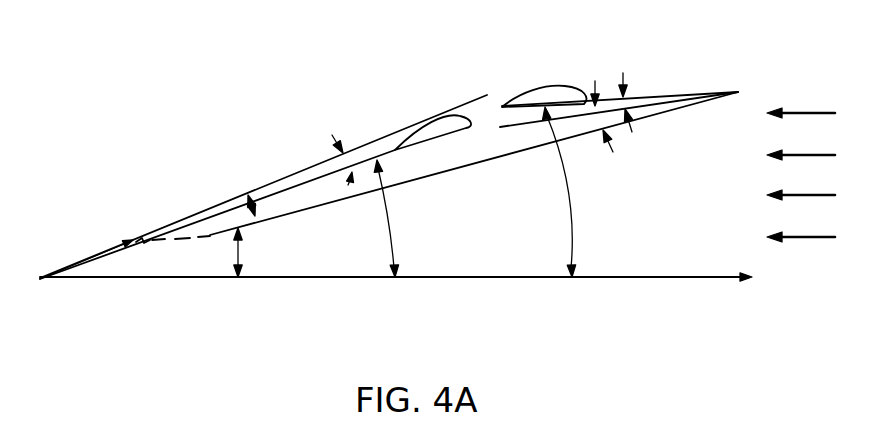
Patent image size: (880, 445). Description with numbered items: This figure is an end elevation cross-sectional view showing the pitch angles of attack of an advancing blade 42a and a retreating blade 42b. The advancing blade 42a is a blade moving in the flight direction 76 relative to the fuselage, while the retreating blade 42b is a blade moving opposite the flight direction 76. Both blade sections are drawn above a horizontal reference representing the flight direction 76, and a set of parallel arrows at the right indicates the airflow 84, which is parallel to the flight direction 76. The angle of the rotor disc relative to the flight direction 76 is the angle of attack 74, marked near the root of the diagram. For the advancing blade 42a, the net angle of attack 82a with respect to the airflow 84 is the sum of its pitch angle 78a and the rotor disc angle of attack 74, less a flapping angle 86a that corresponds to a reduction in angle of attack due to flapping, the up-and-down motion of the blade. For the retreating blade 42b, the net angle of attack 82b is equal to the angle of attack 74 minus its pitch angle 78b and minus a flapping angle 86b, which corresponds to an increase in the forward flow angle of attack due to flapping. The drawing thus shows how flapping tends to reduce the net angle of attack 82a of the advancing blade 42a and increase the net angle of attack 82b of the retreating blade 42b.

The advancing blade 42a is at (437, 118).
The retreating blade 42b is at (547, 90).
The angle of attack 74 is at (240, 252).
The flight direction 76 is at (637, 278).
The pitch angle 78a is at (246, 204).
The pitch angle 78b is at (612, 148).
The net angle of attack 82a is at (390, 223).
The net angle of attack 82b is at (571, 197).
The airflow 84 is at (806, 112).
The flapping angle 86a is at (332, 135).
The flapping angle 86b is at (624, 75).